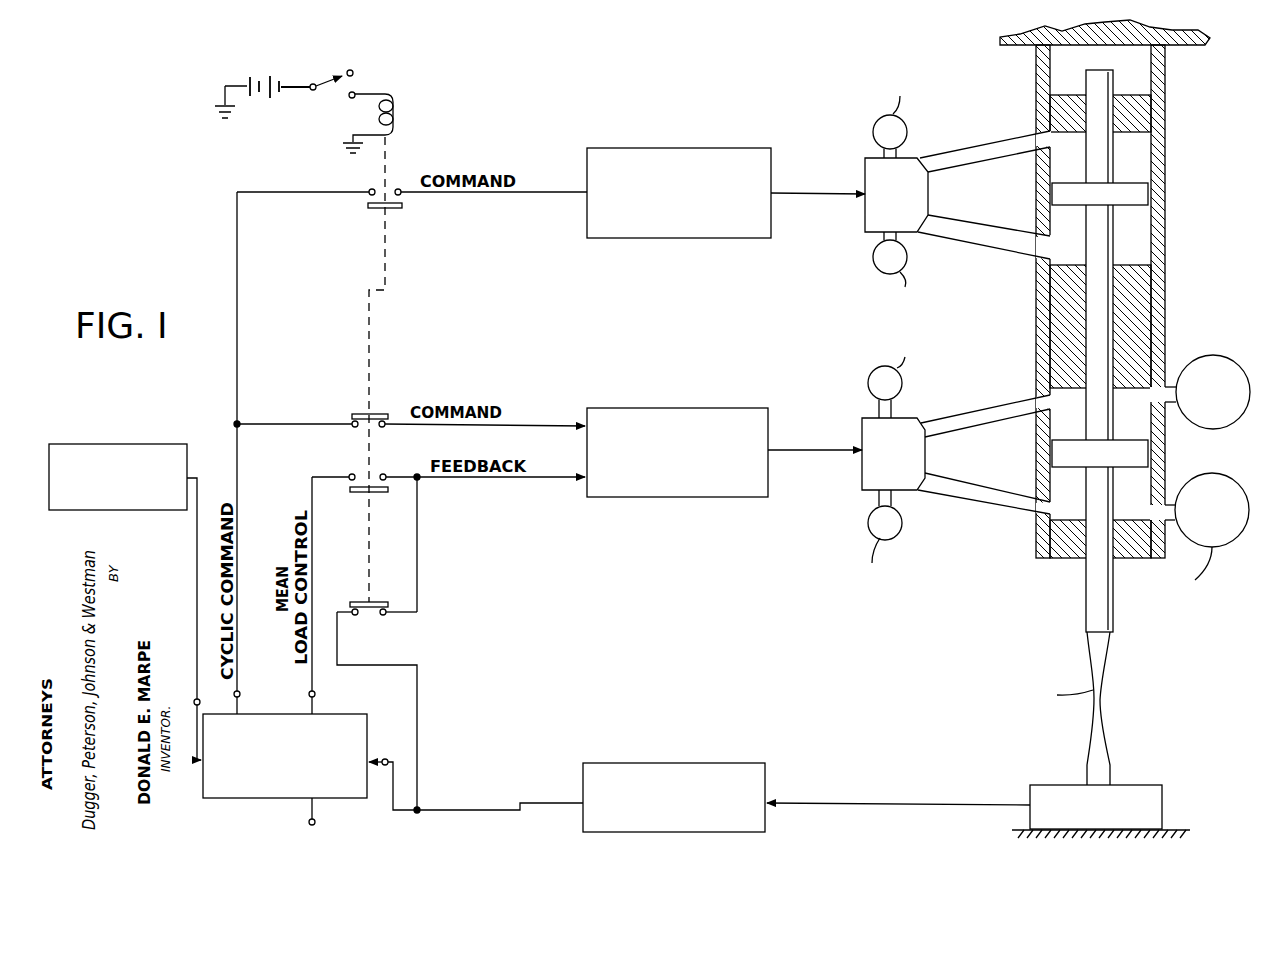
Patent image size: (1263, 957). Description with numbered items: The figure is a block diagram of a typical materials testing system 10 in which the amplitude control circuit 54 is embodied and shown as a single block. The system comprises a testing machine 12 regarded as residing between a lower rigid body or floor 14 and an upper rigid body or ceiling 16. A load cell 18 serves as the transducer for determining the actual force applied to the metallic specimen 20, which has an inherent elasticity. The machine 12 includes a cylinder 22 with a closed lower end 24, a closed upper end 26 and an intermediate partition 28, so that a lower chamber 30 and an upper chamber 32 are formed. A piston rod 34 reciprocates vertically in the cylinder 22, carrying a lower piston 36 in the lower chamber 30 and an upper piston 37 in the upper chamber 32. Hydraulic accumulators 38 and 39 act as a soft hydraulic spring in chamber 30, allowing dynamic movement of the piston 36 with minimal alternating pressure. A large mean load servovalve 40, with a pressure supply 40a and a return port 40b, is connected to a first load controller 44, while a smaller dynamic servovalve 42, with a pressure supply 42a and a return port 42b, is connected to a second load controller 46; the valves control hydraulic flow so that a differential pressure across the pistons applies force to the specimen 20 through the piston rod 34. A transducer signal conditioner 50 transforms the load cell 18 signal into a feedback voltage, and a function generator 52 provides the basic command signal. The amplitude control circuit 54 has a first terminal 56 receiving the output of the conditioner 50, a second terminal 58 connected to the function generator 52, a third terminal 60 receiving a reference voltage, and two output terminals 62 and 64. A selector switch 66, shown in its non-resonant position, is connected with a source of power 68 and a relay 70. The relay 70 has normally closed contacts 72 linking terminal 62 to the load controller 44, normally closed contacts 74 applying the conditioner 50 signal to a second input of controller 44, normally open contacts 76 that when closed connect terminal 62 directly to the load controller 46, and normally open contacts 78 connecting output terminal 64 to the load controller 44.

The materials testing system 10 is at (642, 98).
The testing machine 12 is at (1105, 326).
The floor 14 is at (1020, 828).
The ceiling 16 is at (1200, 45).
The load cell 18 is at (1163, 808).
The metallic specimen 20 is at (1101, 712).
The cylinder 22 is at (1110, 322).
The closed lower end 24 is at (1065, 560).
The closed upper end 26 is at (1142, 120).
The intermediate partition 28 is at (1133, 326).
The lower chamber 30 is at (1137, 500).
The upper chamber 32 is at (1140, 247).
The piston rod 34 is at (1083, 419).
The lower piston 36 is at (1138, 452).
The upper piston 37 is at (1135, 193).
The hydraulic accumulator 38 is at (1235, 481).
The hydraulic accumulator 39 is at (1235, 365).
The mean load servovalve 40 is at (934, 471).
The pressure supply 40a is at (902, 383).
The return port 40b is at (868, 530).
The dynamic servovalve 42 is at (937, 191).
The pressure supply 42a is at (907, 132).
The return port 42b is at (907, 257).
The first load controller 44 is at (727, 408).
The second load controller 46 is at (696, 148).
The transducer signal conditioner 50 is at (731, 763).
The function generator 52 is at (97, 444).
The amplitude control circuit 54 is at (240, 798).
The first terminal 56 is at (387, 758).
The second terminal 58 is at (205, 619).
The third terminal 60 is at (309, 822).
The output terminal 62 is at (240, 694).
The output terminal 64 is at (315, 694).
The selector switch 66 is at (328, 78).
The source of power 68 is at (258, 74).
The relay 70 is at (398, 100).
The first set of normally closed contacts 72 is at (350, 422).
The second set of normally closed contacts 74 is at (380, 616).
The third set of contacts 76 is at (368, 190).
The fourth set of normally open contacts 78 is at (350, 474).